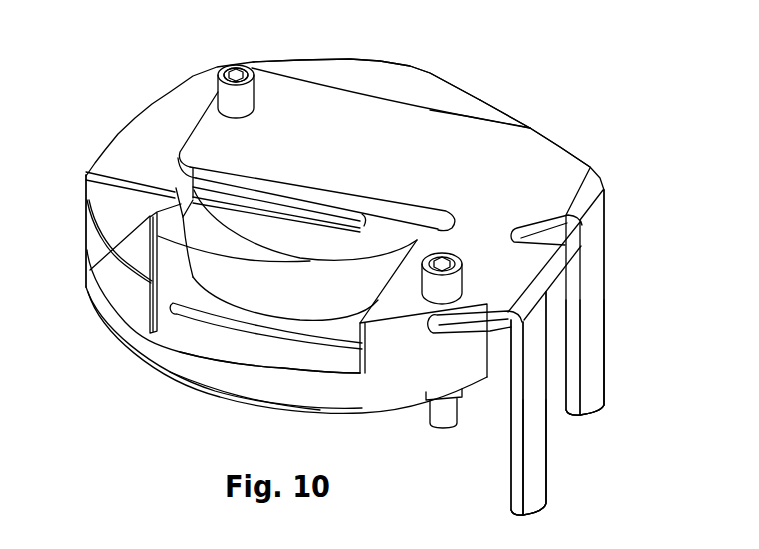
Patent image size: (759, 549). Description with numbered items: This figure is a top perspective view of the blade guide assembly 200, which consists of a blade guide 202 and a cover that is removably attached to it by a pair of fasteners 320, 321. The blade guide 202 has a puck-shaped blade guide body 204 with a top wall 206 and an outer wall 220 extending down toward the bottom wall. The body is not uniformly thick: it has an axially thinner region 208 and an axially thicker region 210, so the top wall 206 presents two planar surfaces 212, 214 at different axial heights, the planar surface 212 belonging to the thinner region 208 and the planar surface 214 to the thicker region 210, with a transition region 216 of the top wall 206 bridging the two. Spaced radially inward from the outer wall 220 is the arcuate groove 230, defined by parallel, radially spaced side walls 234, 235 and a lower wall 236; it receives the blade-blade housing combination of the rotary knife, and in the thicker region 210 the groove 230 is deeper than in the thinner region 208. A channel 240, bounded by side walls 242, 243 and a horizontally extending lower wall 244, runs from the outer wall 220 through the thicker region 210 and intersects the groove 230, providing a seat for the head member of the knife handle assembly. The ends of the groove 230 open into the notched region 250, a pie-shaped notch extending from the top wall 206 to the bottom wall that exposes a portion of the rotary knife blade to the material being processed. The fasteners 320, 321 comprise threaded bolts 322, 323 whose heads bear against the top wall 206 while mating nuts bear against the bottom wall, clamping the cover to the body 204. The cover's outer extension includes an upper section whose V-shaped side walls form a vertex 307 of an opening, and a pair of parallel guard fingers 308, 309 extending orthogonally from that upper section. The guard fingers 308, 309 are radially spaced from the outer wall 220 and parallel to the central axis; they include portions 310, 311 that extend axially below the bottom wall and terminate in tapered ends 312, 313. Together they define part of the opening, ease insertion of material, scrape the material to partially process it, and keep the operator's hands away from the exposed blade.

The blade guide assembly 200 is at (580, 116).
The blade guide 202 is at (438, 70).
The blade guide body 204 is at (385, 60).
The top wall 206 is at (161, 117).
The axially thinner region 208 is at (343, 76).
The axially thicker region 210 is at (110, 214).
The planar surface 212 is at (438, 102).
The planar surface 214 is at (98, 190).
The transition region 216 is at (108, 174).
The outer wall 220 is at (115, 303).
The arcuate groove 230 is at (184, 193).
The side wall 234 is at (270, 258).
The side wall 235 is at (182, 209).
The lower wall 236 is at (120, 288).
The channel 240 is at (210, 358).
The side wall 242 is at (162, 302).
The side wall 243 is at (352, 360).
The lower wall 244 is at (282, 352).
The notched region 250 is at (445, 243).
The vertex 307 is at (541, 232).
The guard finger 308 is at (555, 457).
The guard finger 309 is at (612, 270).
The portion 310 is at (533, 488).
The portion 311 is at (590, 388).
The tapered end 312 is at (525, 518).
The tapered end 313 is at (590, 420).
The fastener 320 is at (215, 60).
The fastener 321 is at (425, 300).
The threaded bolt 322 is at (249, 40).
The threaded bolt 323 is at (467, 329).